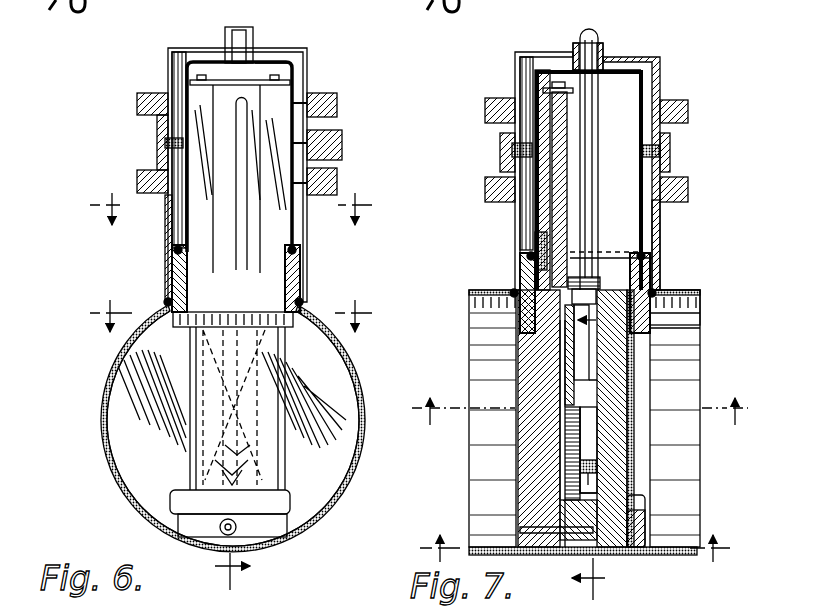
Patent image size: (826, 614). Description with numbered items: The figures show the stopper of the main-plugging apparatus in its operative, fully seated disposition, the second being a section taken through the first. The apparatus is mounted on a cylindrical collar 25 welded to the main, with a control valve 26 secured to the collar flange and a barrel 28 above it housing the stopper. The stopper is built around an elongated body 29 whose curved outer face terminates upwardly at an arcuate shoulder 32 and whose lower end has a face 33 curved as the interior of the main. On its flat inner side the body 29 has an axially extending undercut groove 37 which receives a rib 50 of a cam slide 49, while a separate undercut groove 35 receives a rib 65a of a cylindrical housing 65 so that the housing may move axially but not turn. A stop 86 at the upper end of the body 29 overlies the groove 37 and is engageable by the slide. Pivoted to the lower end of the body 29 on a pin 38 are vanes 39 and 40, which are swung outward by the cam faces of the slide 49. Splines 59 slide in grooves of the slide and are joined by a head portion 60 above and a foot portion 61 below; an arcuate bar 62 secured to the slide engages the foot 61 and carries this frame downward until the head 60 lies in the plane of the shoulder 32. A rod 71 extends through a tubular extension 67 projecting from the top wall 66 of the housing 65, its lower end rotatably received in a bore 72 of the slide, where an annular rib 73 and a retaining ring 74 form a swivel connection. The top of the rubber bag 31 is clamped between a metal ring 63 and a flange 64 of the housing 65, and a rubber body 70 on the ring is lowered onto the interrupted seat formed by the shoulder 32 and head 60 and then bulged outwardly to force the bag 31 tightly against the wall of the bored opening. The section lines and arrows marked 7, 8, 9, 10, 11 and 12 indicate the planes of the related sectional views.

In FIG. 6, the barrel 28 is at (170, 76).
In FIG. 7, the barrel 28 is at (661, 73).
In FIG. 6, the cylindrical housing 65 is at (180, 70).
In FIG. 6, the rib 65a is at (237, 70).
In FIG. 7, the rib 65a is at (536, 129).
In FIG. 6, the tubular extension 67 is at (255, 40).
In FIG. 7, the tubular extension 67 is at (603, 43).
In FIG. 6, the stop 86 is at (250, 85).
In FIG. 7, the stop 86 is at (545, 92).
In FIG. 6, the top wall 66 is at (283, 64).
In FIG. 7, the top wall 66 is at (620, 70).
In FIG. 6, the elongated body 29 is at (283, 100).
In FIG. 6, the undercut groove 37 is at (258, 240).
In FIG. 7, the undercut groove 37 is at (568, 124).
In FIG. 6, the rod 71 is at (246, 118).
In FIG. 7, the rod 71 is at (583, 97).
In FIG. 6, the control valve 26 is at (157, 128).
In FIG. 7, the control valve 26 is at (672, 143).
In FIG. 6, the section line 8 is at (231, 205).
In FIG. 6, the cylindrical collar 25 is at (170, 240).
In FIG. 7, the cylindrical collar 25 is at (660, 220).
In FIG. 6, the flange 64 is at (176, 254).
In FIG. 7, the flange 64 is at (645, 256).
In FIG. 6, the metal ring 63 is at (176, 288).
In FIG. 7, the metal ring 63 is at (651, 272).
In FIG. 6, the rubber body 70 is at (166, 300).
In FIG. 7, the rubber body 70 is at (512, 290).
In FIG. 6, the section line 9 is at (231, 311).
In FIG. 6, the head portion 60 is at (190, 327).
In FIG. 7, the head portion 60 is at (700, 332).
In FIG. 6, the rubber bag 31 is at (108, 358).
In FIG. 7, the rubber bag 31 is at (700, 369).
In FIG. 6, the vane 40 is at (300, 360).
In FIG. 7, the vane 40 is at (590, 458).
In FIG. 6, the cam slide 49 is at (262, 378).
In FIG. 7, the cam slide 49 is at (607, 440).
In FIG. 6, the splines 59 is at (264, 408).
In FIG. 7, the splines 59 is at (600, 420).
In FIG. 6, the vane 39 is at (128, 405).
In FIG. 7, the vane 39 is at (560, 462).
In FIG. 6, the arcuate bar 62 is at (172, 502).
In FIG. 7, the arcuate bar 62 is at (646, 500).
In FIG. 6, the foot portion 61 is at (270, 535).
In FIG. 7, the foot portion 61 is at (640, 528).
In FIG. 6, the section line 7 is at (232, 577).
In FIG. 7, the undercut groove 35 is at (535, 240).
In FIG. 7, the retaining ring 74 is at (585, 278).
In FIG. 7, the arcuate shoulder 32 is at (520, 313).
In FIG. 7, the annular rib 73 is at (575, 320).
In FIG. 7, the section line 11 is at (585, 415).
In FIG. 7, the bore 72 is at (563, 388).
In FIG. 7, the rib 50 is at (575, 440).
In FIG. 7, the pin 38 is at (520, 510).
In FIG. 7, the section line 12 is at (577, 547).
In FIG. 7, the face 33 is at (610, 555).
In FIG. 7, the section line 10 is at (596, 582).